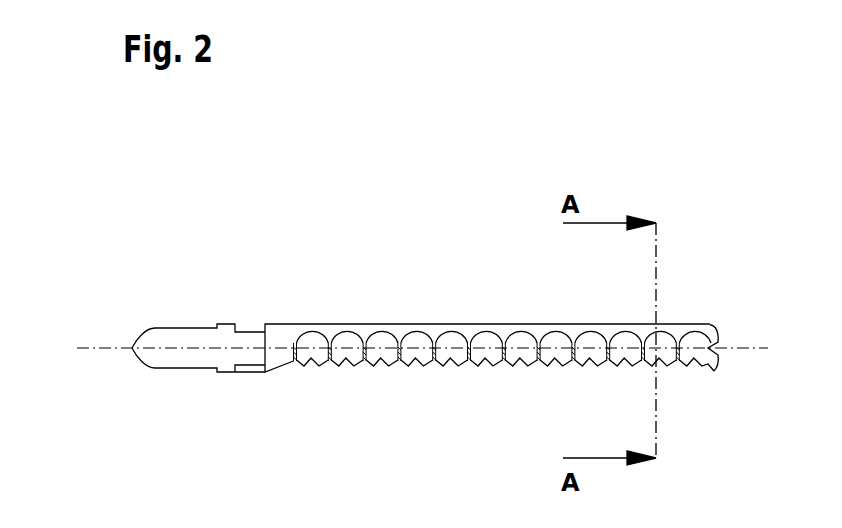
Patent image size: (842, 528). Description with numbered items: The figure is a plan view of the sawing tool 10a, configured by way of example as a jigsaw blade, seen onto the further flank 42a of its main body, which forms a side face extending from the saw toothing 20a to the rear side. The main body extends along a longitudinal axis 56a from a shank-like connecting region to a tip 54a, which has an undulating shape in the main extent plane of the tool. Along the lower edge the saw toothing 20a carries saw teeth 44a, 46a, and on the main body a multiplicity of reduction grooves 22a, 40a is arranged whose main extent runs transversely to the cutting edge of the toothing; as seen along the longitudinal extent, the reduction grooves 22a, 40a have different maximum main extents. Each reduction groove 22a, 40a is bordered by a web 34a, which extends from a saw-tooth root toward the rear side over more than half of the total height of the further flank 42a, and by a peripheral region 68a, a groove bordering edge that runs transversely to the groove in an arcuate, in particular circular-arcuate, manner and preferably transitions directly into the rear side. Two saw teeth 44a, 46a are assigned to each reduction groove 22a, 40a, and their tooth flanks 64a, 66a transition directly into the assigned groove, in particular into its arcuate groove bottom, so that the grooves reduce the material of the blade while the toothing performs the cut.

The sawing tool 10a is at (168, 256).
The saw toothing 20a is at (732, 377).
The reduction groove 22a is at (552, 323).
The web 34a is at (513, 323).
The reduction groove 40a is at (586, 298).
The further flank 42a is at (400, 323).
The saw tooth 44a is at (462, 370).
The saw tooth 46a is at (548, 373).
The tip 54a is at (732, 331).
The longitudinal axis 56a is at (103, 350).
The tooth flank 64a is at (445, 370).
The tooth flank 66a is at (543, 370).
The peripheral region 68a is at (468, 323).